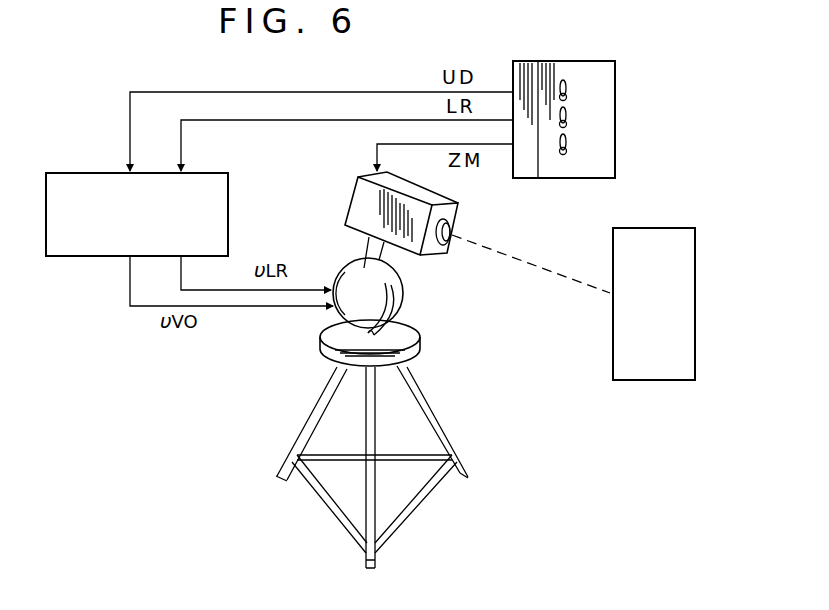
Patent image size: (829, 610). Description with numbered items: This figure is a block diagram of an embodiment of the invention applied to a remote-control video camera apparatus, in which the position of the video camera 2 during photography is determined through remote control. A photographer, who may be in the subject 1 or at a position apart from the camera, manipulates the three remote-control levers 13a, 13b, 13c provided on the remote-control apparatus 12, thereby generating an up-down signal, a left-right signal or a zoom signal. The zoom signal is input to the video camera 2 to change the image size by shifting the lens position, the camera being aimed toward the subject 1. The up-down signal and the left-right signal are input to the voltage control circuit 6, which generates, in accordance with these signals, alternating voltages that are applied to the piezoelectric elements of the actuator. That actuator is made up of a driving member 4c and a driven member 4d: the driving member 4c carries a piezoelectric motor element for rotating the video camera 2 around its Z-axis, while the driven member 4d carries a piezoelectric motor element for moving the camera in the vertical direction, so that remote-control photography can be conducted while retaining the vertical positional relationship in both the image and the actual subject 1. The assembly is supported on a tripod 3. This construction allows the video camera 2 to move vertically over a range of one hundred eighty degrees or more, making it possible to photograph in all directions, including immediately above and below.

The subject 1 is at (695, 262).
The video camera 2 is at (460, 208).
The tripod 3 is at (443, 432).
The driving member 4c is at (414, 332).
The driven member 4d is at (400, 288).
The voltage control circuit 6 is at (100, 173).
The remote-control apparatus 12 is at (569, 61).
The remote-control lever 13a is at (568, 84).
The remote-control lever 13b is at (568, 112).
The remote-control lever 13c is at (568, 140).